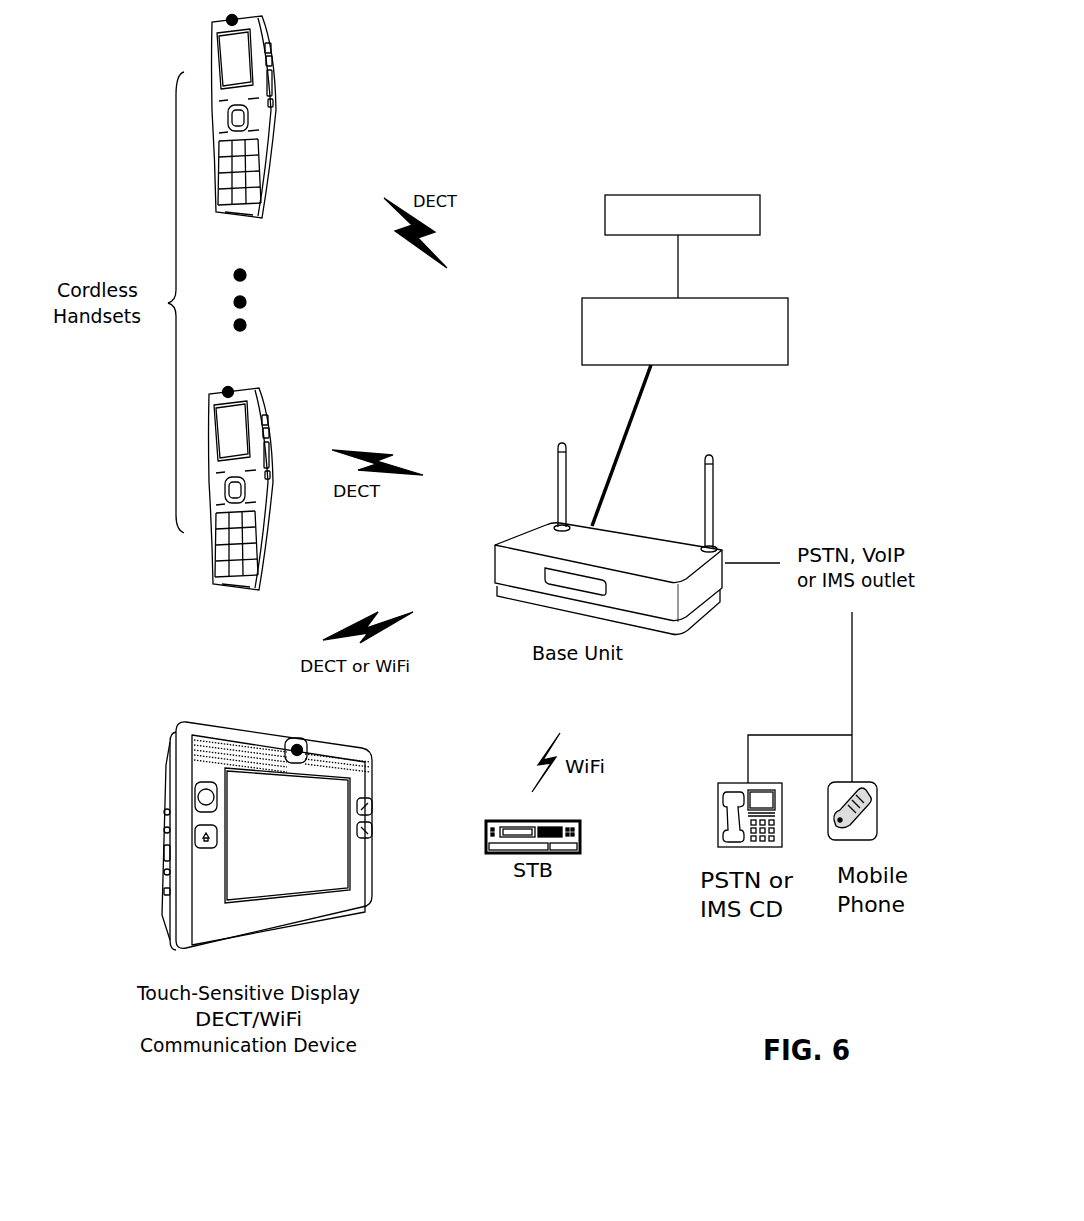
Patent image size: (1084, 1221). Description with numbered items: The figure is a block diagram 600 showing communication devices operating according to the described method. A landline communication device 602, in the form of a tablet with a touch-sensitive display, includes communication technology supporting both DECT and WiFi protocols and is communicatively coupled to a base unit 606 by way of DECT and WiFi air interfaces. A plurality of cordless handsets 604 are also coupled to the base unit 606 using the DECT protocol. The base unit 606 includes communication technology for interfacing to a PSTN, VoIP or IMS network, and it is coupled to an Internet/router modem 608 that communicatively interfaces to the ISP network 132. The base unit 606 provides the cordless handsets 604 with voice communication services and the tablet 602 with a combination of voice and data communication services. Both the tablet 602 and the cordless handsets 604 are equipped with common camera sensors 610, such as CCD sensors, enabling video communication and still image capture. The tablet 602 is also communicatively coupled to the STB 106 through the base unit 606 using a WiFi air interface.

The block diagram 600 is at (805, 1003).
The landline communication device 602 is at (186, 722).
The cordless handsets 604 is at (268, 412).
The base unit 606 is at (674, 633).
The Internet/router modem 608 is at (685, 331).
The camera sensors 610 is at (230, 390).
The ISP network 132 is at (682, 215).
The STB 106 is at (560, 853).